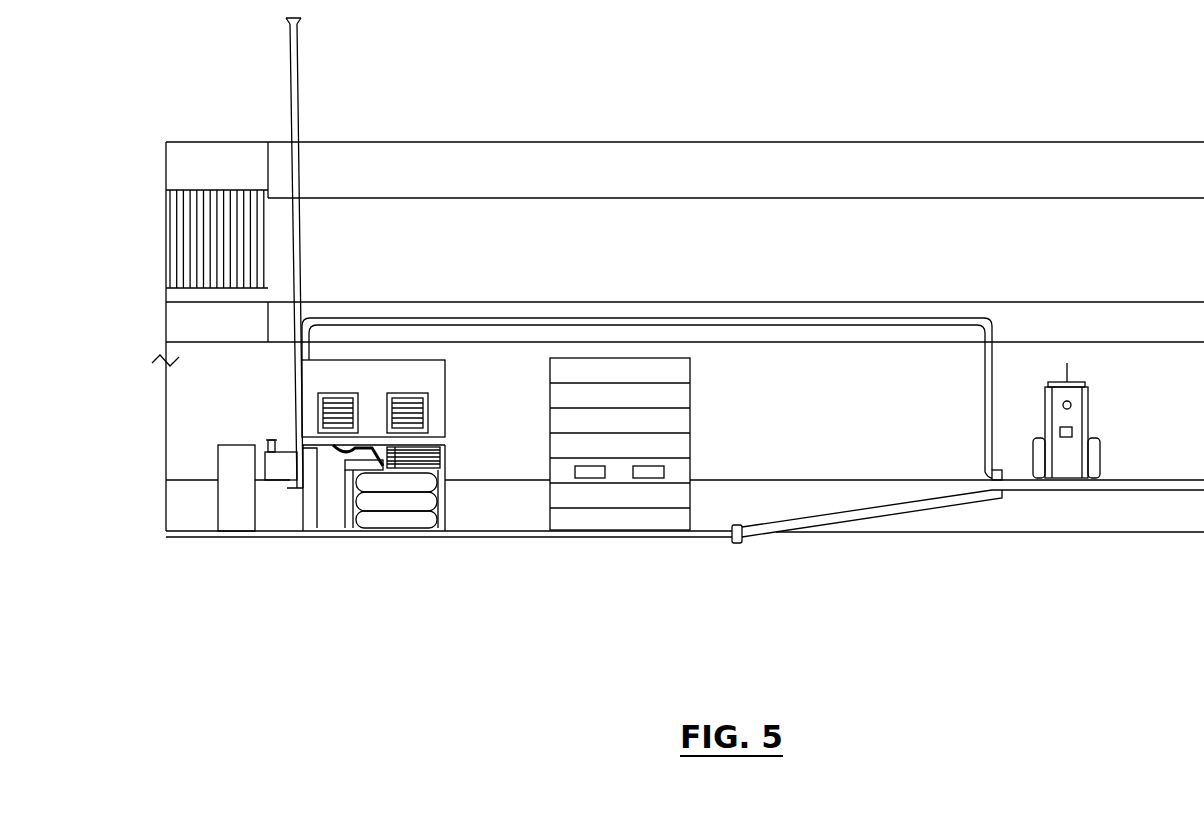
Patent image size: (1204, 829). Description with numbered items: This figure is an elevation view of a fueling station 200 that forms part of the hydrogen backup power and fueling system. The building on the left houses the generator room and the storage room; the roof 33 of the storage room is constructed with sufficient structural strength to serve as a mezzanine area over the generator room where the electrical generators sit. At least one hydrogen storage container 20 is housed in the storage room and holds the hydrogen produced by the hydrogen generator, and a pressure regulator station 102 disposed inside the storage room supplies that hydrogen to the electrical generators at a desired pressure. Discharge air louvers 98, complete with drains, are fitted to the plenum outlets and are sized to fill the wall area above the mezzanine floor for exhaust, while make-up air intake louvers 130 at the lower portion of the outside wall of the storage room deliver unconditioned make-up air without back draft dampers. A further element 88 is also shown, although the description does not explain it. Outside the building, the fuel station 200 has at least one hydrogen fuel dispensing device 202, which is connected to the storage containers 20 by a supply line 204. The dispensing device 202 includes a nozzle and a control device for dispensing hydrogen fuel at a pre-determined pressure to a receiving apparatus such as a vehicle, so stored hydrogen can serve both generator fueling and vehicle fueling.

The hydrogen storage container 20 is at (400, 528).
The roof 33 is at (447, 437).
The fuel supply unit 88 is at (280, 472).
The discharge air louvers 98 is at (395, 393).
The pressure regulator station 102 is at (314, 505).
The make-up air intake louvers 130 is at (443, 487).
The fuel station 200 is at (748, 592).
The hydrogen fuel dispensing device 202 is at (1067, 468).
The supply line 204 is at (830, 515).